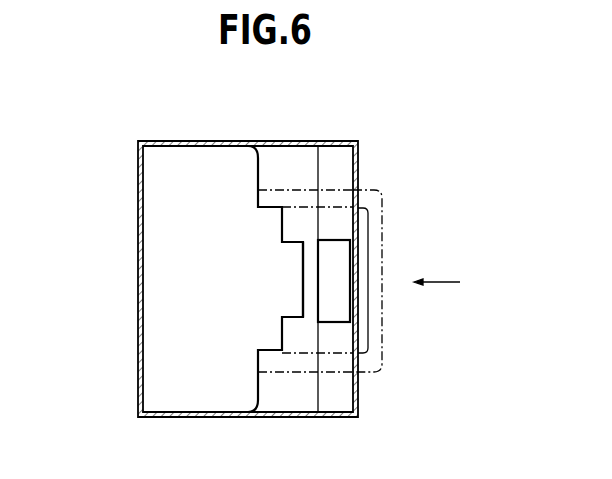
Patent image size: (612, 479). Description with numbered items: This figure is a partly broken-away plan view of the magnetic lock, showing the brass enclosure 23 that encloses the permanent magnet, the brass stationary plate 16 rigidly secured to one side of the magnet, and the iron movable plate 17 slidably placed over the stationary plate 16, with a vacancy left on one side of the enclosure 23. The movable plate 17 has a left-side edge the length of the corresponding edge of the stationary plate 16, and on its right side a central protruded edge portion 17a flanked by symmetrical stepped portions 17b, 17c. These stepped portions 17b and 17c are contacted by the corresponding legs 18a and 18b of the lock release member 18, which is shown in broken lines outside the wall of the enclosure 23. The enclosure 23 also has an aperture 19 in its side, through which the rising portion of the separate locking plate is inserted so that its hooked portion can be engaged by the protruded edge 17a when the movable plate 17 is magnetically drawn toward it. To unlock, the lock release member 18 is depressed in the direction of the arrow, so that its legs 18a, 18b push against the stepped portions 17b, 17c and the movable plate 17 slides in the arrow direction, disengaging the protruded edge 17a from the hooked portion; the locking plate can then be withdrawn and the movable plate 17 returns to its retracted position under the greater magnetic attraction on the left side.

The stationary plate 16 is at (305, 215).
The movable plate 17 is at (188, 160).
The central protruded edge portion 17a is at (305, 287).
The stepped portion 17b is at (258, 398).
The stepped portion 17c is at (260, 162).
The lock release member 18 is at (383, 222).
The leg 18a is at (287, 372).
The leg 18b is at (302, 190).
The aperture 19 is at (340, 275).
The enclosure 23 is at (140, 271).